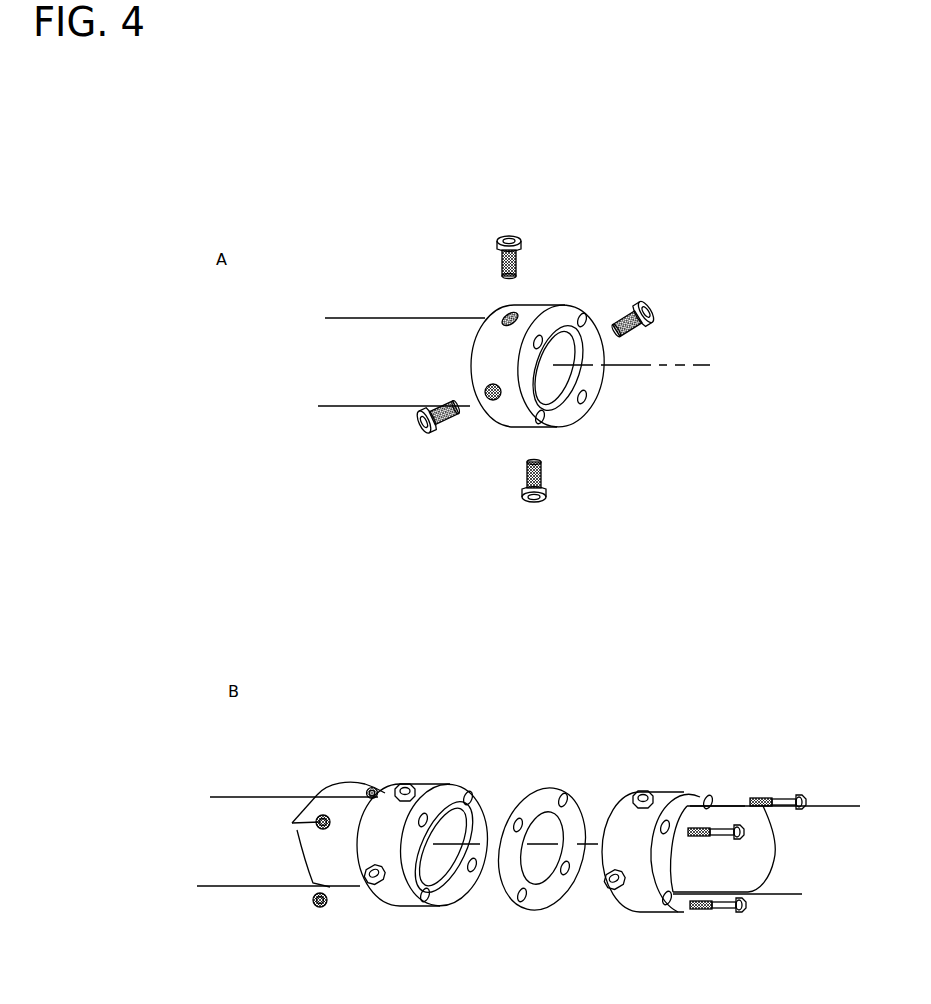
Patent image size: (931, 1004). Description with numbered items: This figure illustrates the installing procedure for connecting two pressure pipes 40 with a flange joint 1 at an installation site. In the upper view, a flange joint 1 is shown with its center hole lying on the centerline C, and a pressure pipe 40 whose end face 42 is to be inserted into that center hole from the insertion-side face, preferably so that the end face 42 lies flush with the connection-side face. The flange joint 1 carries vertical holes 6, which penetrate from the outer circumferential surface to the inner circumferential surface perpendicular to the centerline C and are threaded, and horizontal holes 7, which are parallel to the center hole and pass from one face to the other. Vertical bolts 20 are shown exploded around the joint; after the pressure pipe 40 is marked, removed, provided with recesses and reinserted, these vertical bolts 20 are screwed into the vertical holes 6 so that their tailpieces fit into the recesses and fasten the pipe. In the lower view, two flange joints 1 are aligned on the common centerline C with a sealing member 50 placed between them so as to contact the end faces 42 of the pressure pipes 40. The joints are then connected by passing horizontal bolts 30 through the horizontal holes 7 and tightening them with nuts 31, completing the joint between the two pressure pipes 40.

The flange joint 1 is at (558, 307).
The vertical hole 6 is at (514, 314).
The horizontal hole 7 is at (588, 398).
The vertical bolt 20 is at (522, 242).
The horizontal bolt 30 is at (733, 826).
The nut 31 is at (331, 844).
The pressure pipe 40 is at (366, 322).
The end face 42 is at (567, 403).
The sealing member 50 is at (542, 787).
The centerline C is at (580, 601).